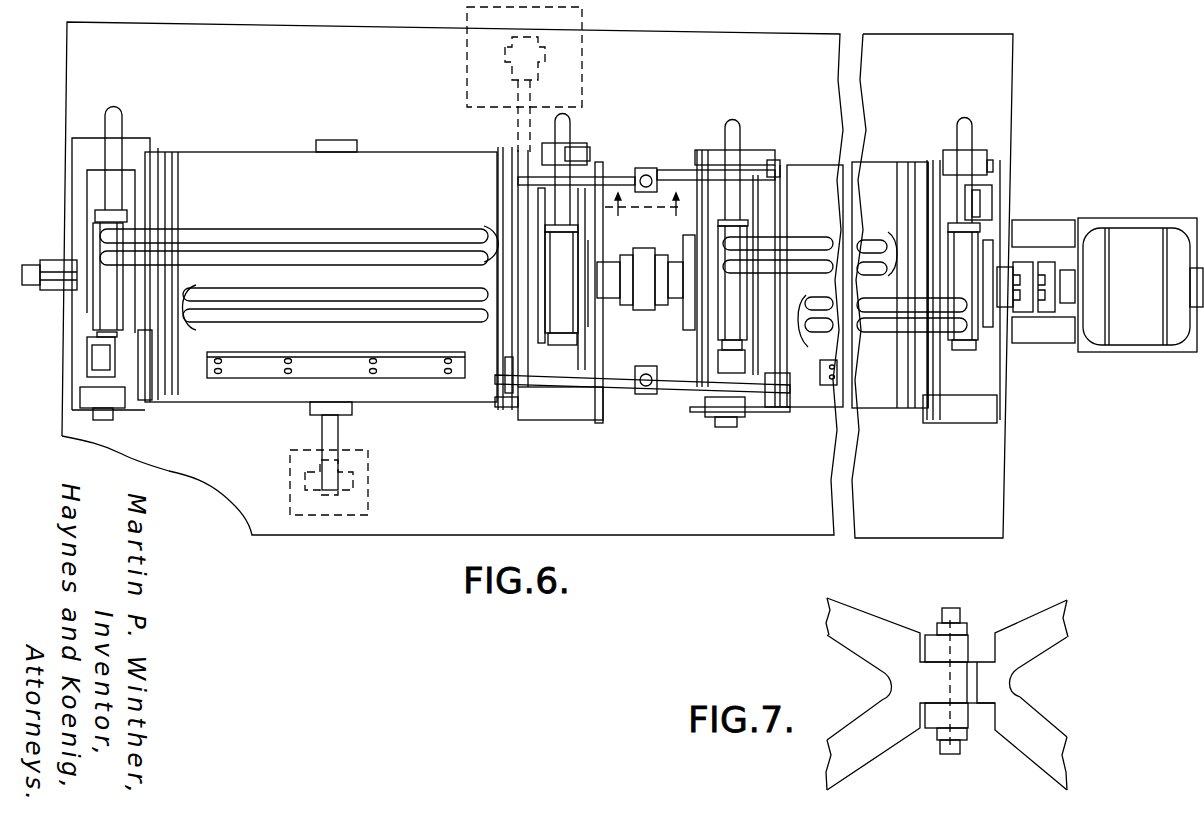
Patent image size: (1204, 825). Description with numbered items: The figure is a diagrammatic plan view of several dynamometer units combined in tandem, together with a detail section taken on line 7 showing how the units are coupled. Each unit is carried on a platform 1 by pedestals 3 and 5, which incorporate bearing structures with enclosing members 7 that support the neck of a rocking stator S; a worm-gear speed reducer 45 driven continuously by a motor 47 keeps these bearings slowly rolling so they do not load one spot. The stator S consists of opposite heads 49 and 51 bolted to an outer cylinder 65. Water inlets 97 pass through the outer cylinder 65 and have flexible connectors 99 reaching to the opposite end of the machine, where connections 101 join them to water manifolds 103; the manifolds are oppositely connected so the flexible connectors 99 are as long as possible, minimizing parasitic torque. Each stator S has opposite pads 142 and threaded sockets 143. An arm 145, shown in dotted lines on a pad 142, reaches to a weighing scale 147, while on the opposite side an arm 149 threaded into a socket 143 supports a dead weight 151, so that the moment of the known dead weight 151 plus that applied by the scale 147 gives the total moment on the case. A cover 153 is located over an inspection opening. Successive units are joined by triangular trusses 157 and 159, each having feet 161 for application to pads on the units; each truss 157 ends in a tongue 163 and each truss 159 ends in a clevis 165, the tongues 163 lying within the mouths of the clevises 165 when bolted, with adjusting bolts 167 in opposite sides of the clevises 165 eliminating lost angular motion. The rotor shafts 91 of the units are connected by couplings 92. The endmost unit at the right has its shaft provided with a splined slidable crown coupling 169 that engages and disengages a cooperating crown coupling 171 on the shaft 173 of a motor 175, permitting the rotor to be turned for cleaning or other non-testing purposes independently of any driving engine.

In FIG. 6, the platform 1 is at (625, 518).
In FIG. 6, the pedestal 3 is at (92, 140).
In FIG. 6, the pedestal 5 is at (535, 148).
In FIG. 6, the enclosing member 7 is at (646, 213).
In FIG. 6, the worm-gear speed reducer 45 is at (100, 358).
In FIG. 6, the motor 47 is at (108, 402).
In FIG. 6, the head 49 is at (163, 210).
In FIG. 6, the head 51 is at (497, 212).
In FIG. 6, the outer cylinder 65 is at (400, 402).
In FIG. 6, the rotor shaft 91 is at (35, 286).
In FIG. 6, the coupling 92 is at (648, 262).
In FIG. 6, the water inlet 97 is at (190, 332).
In FIG. 6, the flexible connector 99 is at (319, 262).
In FIG. 6, the connection 101 is at (104, 256).
In FIG. 6, the water manifold 103 is at (112, 287).
In FIG. 6, the pad 142 is at (350, 140).
In FIG. 6, the threaded socket 143 is at (158, 150).
In FIG. 6, the arm 145 is at (322, 432).
In FIG. 6, the weighing scale 147 is at (368, 498).
In FIG. 6, the arm 149 is at (515, 113).
In FIG. 6, the dead weight 151 is at (467, 58).
In FIG. 6, the cover 153 is at (255, 372).
In FIG. 6, the truss 157 is at (597, 180).
In FIG. 7, the truss 157 is at (845, 618).
In FIG. 6, the truss 159 is at (700, 165).
In FIG. 7, the truss 159 is at (1035, 625).
In FIG. 6, the foot 161 is at (525, 395).
In FIG. 7, the tongue 163 is at (955, 672).
In FIG. 6, the clevis 165 is at (643, 170).
In FIG. 7, the clevis 165 is at (962, 725).
In FIG. 6, the adjusting bolt 167 is at (650, 176).
In FIG. 7, the adjusting bolt 167 is at (950, 607).
In FIG. 6, the splined slidable crown coupling 169 is at (1018, 265).
In FIG. 6, the crown coupling 171 is at (1045, 312).
In FIG. 6, the motor shaft 173 is at (1062, 265).
In FIG. 6, the motor 175 is at (1140, 250).
In FIG. 6, the rocking stator S is at (281, 170).